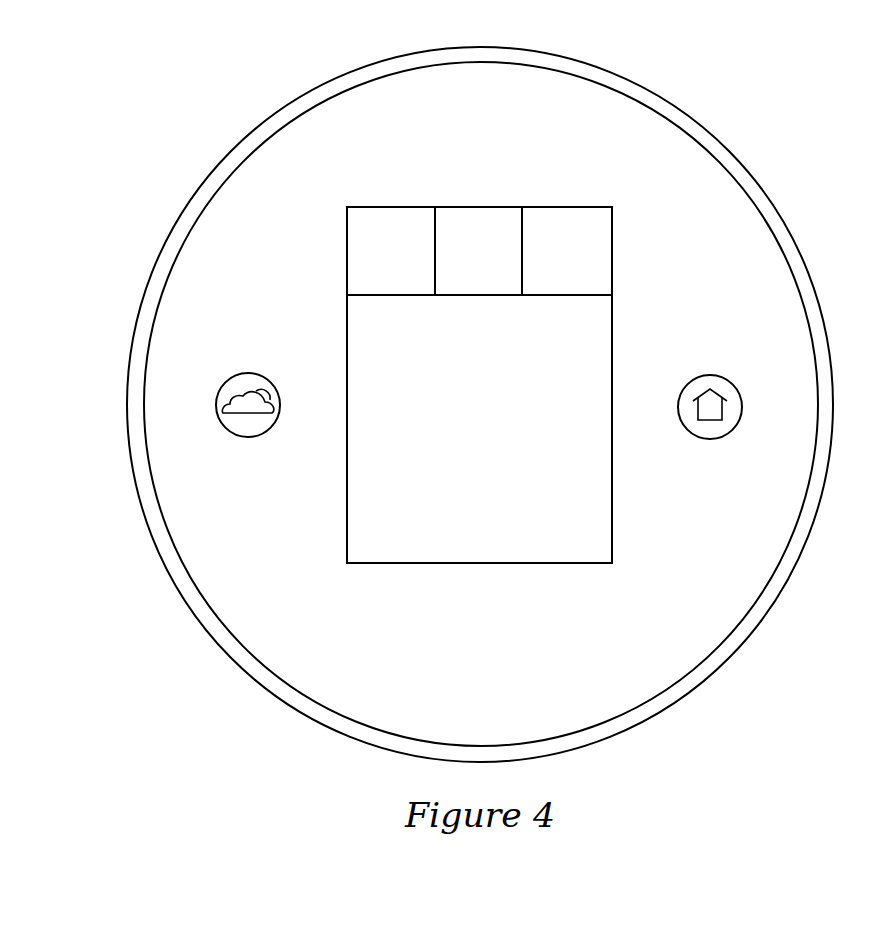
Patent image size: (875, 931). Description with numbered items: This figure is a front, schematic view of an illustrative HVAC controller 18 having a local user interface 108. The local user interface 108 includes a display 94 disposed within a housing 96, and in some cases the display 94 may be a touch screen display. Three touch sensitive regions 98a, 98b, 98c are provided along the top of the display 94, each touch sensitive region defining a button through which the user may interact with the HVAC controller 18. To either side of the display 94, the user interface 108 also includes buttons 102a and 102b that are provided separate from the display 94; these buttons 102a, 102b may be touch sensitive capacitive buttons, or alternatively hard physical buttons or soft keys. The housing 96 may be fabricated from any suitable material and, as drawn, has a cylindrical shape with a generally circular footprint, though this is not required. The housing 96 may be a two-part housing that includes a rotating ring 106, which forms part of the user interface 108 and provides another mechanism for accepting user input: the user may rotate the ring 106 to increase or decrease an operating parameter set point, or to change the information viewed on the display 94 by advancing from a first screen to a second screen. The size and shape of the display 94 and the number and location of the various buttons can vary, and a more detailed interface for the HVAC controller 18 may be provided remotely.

The HVAC controller 18 is at (487, 404).
The display 94 is at (486, 398).
The housing 96 is at (770, 204).
The touch sensitive region 98a is at (388, 213).
The touch sensitive region 98b is at (474, 213).
The touch sensitive region 98c is at (564, 213).
The button 102a is at (237, 376).
The button 102b is at (721, 378).
The rotating ring 106 is at (232, 148).
The local user interface 108 is at (736, 597).